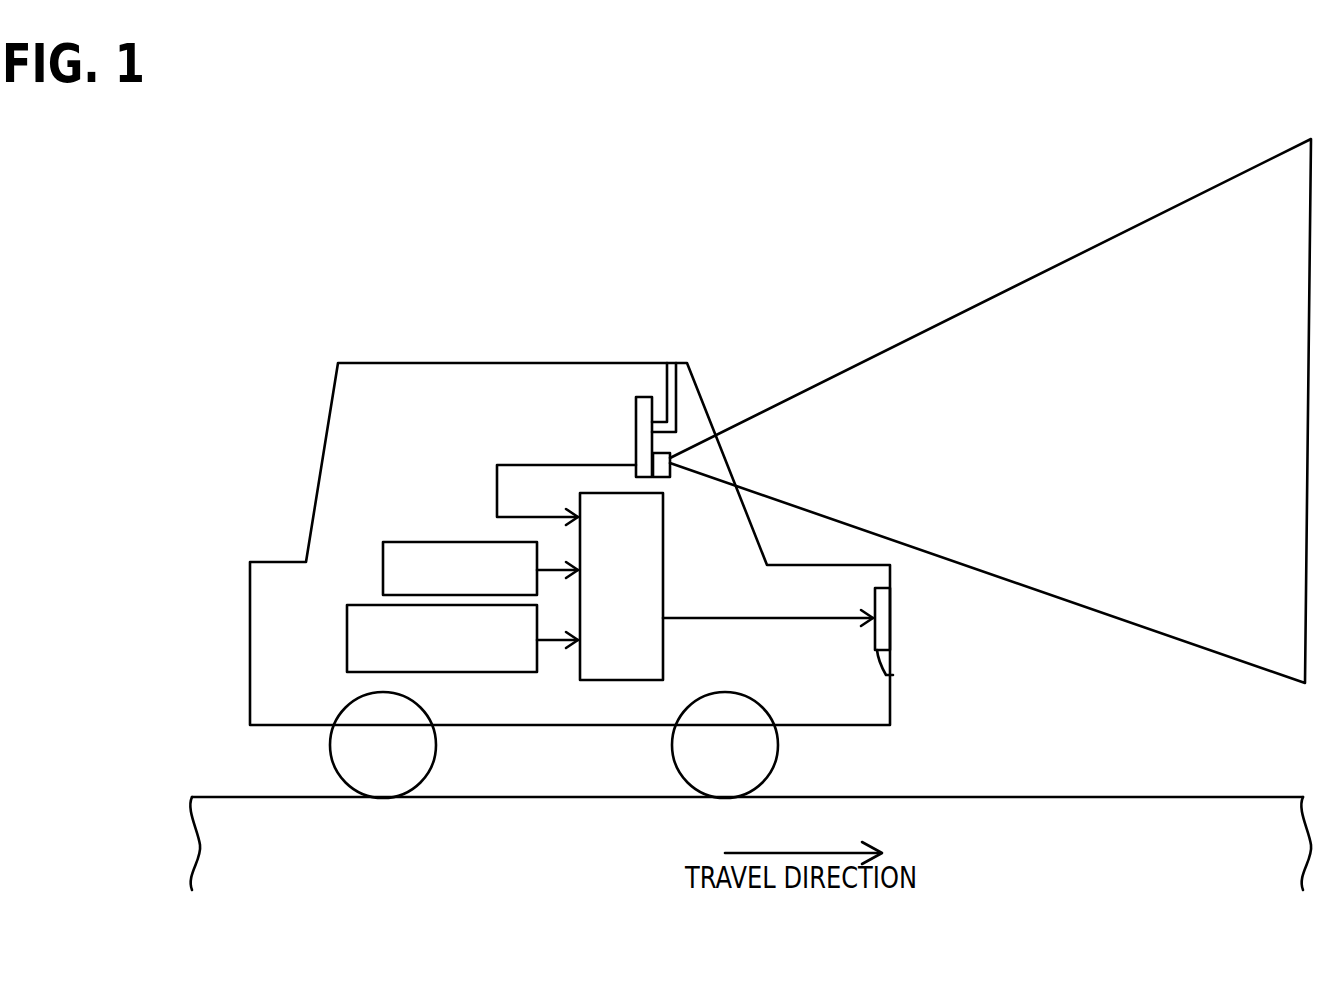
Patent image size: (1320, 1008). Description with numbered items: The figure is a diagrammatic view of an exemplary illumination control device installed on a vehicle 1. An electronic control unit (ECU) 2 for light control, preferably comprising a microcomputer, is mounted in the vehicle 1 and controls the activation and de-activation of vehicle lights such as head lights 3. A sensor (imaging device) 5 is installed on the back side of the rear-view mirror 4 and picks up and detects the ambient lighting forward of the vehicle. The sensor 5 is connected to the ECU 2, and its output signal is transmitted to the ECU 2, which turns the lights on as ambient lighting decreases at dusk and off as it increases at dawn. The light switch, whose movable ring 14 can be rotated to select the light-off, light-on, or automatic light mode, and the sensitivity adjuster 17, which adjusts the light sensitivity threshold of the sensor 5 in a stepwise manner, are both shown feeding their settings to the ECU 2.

The vehicle 1 is at (382, 363).
The electronic control unit (ECU) 2 is at (622, 680).
The head lights 3 is at (893, 675).
The rear-view mirror 4 is at (638, 397).
The sensor (imaging device) 5 is at (661, 453).
The movable ring 14 is at (383, 572).
The sensitivity adjuster 17 is at (347, 638).